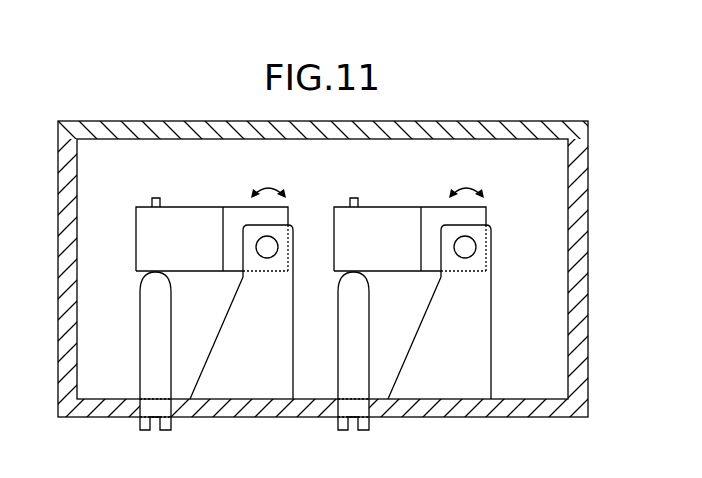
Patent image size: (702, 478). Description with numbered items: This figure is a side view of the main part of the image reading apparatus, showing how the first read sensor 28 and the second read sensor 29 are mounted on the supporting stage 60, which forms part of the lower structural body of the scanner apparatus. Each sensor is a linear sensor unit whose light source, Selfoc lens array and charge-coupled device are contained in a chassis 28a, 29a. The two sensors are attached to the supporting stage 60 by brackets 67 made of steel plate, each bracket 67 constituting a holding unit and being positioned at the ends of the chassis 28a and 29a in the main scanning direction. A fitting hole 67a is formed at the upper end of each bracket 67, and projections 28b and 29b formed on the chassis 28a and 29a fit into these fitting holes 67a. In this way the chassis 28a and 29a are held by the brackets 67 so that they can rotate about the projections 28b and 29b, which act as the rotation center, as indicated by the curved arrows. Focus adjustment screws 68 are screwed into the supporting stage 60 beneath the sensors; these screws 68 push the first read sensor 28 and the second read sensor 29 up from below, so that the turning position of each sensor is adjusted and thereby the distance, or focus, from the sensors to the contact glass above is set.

The supporting stage 60 is at (183, 131).
The first read sensor 28 is at (189, 214).
The chassis of first read sensor 28a is at (135, 228).
The projection of first read sensor 28b is at (266, 245).
The second read sensor 29 is at (386, 214).
The chassis of second read sensor 29a is at (333, 226).
The projection of second read sensor 29b is at (464, 249).
The bracket 67 is at (282, 312).
The fitting hole 67a is at (276, 251).
The focus adjustment screw 68 is at (147, 408).